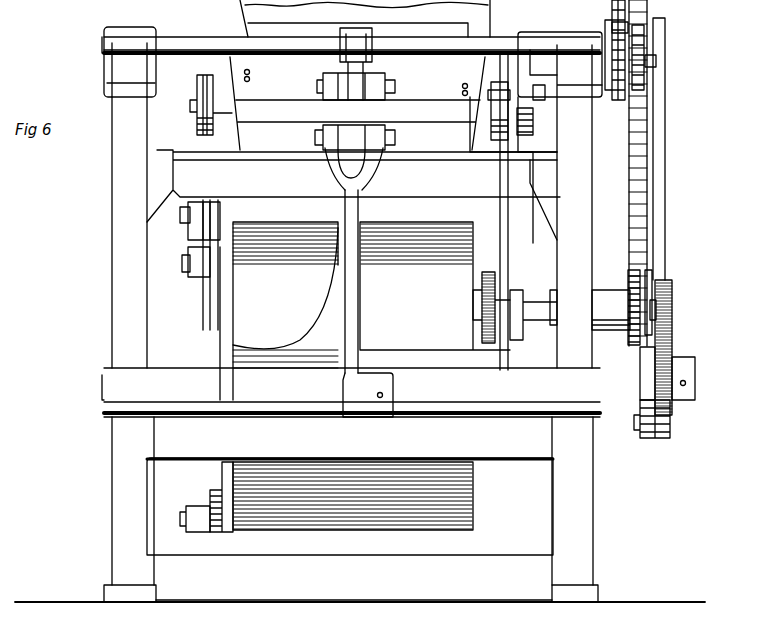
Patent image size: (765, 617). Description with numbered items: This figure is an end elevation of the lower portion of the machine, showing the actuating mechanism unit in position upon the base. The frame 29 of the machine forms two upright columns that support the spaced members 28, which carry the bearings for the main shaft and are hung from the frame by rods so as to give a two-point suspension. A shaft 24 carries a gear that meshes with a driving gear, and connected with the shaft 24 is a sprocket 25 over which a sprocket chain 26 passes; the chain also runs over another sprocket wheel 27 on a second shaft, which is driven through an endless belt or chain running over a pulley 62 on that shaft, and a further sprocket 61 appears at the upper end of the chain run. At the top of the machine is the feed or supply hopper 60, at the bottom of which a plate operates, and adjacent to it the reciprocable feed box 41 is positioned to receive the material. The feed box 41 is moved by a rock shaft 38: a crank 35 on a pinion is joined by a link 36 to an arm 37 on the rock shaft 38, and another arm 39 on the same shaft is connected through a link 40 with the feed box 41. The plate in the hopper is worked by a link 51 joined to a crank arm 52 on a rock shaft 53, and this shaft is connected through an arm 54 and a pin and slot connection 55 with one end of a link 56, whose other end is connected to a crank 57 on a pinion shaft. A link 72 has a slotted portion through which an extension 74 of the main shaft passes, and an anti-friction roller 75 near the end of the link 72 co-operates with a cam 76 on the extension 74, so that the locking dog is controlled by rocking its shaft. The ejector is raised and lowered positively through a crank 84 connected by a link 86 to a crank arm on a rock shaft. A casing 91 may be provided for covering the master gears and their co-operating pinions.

The shaft 24 is at (541, 297).
The sprocket 25 is at (648, 272).
The sprocket chain 26 is at (672, 193).
The sprocket wheel 27 is at (647, 33).
The spaced members 28 is at (653, 63).
The frame 29 is at (123, 490).
The crank 35 is at (220, 220).
The link 36 is at (192, 243).
The arm 37 is at (218, 312).
The rock shaft 38 is at (450, 400).
The arm 39 is at (363, 212).
The link 40 is at (355, 140).
The reciprocable feed box 41 is at (288, 143).
The link 51 is at (335, 85).
The crank arm 52 is at (345, 76).
The rock shaft 53 is at (489, 45).
The arm 54 is at (545, 62).
The pin and slot connection 55 is at (533, 122).
The link 56 is at (513, 243).
The crank 57 is at (488, 282).
The feed hopper 60 is at (470, 7).
The sprocket 61 is at (620, 22).
The pulley 62 is at (620, 100).
The link 72 is at (667, 140).
The extension 74 is at (697, 390).
The anti-friction roller 75 is at (652, 420).
The cam 76 is at (647, 350).
The crank 84 is at (222, 532).
The link 86 is at (187, 523).
The casing 91 is at (454, 216).